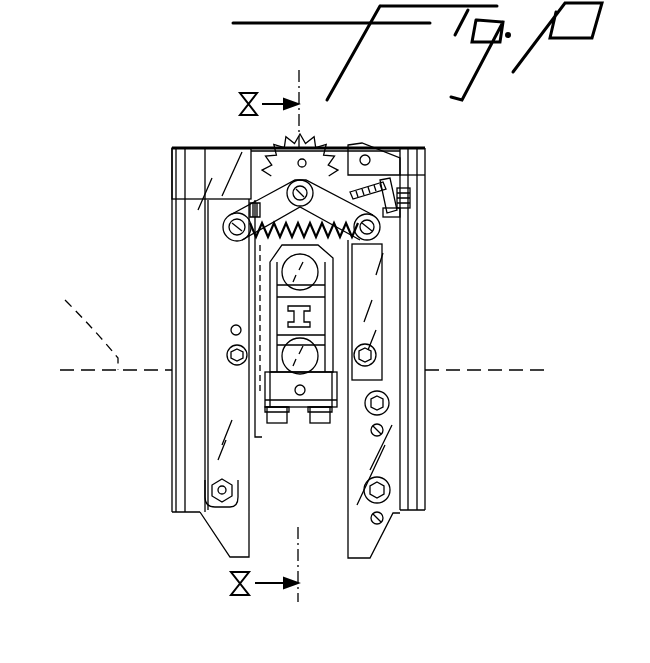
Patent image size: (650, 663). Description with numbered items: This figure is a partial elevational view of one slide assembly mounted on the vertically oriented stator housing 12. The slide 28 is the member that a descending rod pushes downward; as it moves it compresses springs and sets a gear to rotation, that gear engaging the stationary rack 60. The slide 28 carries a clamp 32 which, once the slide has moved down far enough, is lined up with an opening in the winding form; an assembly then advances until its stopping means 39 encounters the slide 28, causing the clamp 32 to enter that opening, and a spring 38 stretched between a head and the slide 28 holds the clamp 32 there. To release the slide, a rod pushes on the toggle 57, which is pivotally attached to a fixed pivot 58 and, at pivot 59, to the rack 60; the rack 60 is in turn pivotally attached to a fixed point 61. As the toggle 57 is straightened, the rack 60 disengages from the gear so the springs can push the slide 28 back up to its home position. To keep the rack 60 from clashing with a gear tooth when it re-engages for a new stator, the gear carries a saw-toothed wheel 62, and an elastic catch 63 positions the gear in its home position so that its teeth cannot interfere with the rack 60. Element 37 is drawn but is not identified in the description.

The stator housing 12 is at (73, 324).
The slide 28 is at (217, 155).
The clamp 32 is at (303, 417).
The roller 37 is at (295, 271).
The spring 38 is at (287, 299).
The stopping means 39 is at (293, 413).
The toggle 57 is at (275, 162).
The fixed pivot 58 is at (380, 229).
The pivot 59 is at (230, 217).
The rack 60 is at (222, 288).
The fixed point 61 is at (230, 497).
The saw-toothed wheel 62 is at (322, 152).
The elastic catch 63 is at (383, 165).